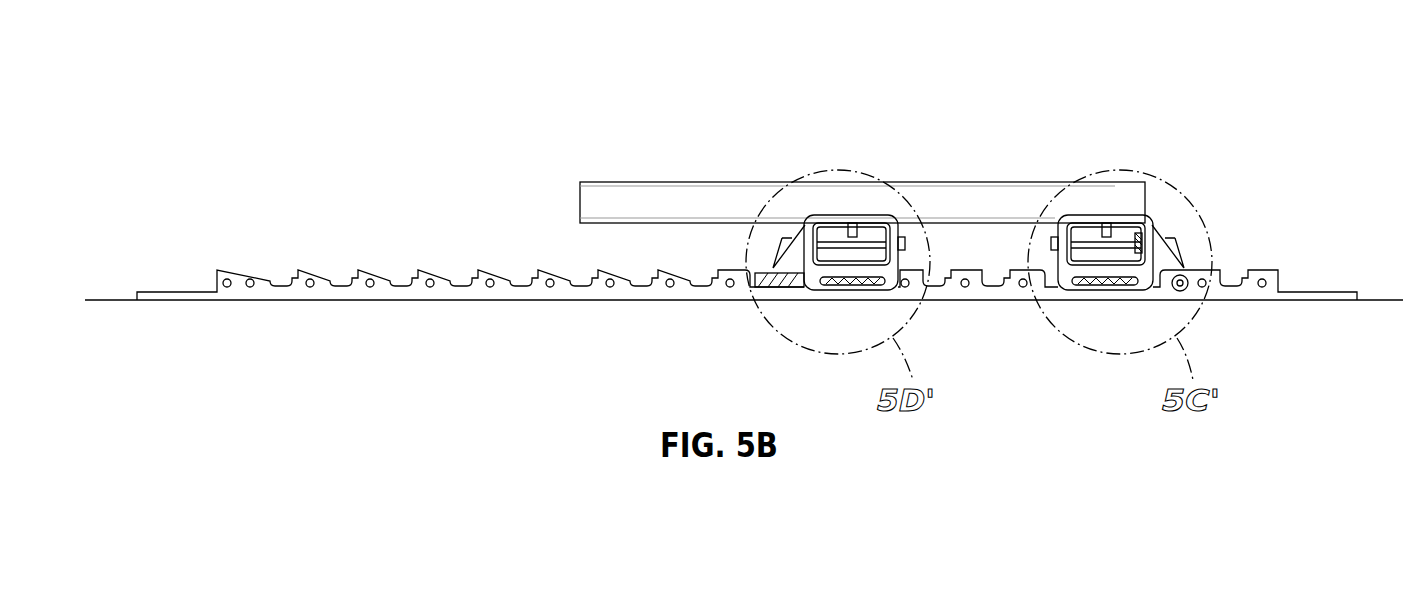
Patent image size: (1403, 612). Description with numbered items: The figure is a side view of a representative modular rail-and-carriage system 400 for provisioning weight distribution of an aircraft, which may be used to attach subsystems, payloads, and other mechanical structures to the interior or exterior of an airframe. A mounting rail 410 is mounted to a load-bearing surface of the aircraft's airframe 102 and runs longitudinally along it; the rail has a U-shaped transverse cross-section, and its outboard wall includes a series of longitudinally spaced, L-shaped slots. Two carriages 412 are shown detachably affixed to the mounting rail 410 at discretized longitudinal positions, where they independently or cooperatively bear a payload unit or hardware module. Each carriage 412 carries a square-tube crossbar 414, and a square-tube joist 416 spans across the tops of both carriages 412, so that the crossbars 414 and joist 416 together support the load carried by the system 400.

The modular rail-and-carriage system 400 is at (287, 72).
The airframe 102 is at (1375, 297).
The mounting rail 410 is at (163, 292).
The carriage 412 is at (877, 215).
The square-tube crossbar 414 is at (823, 222).
The square-tube joist 416 is at (605, 181).